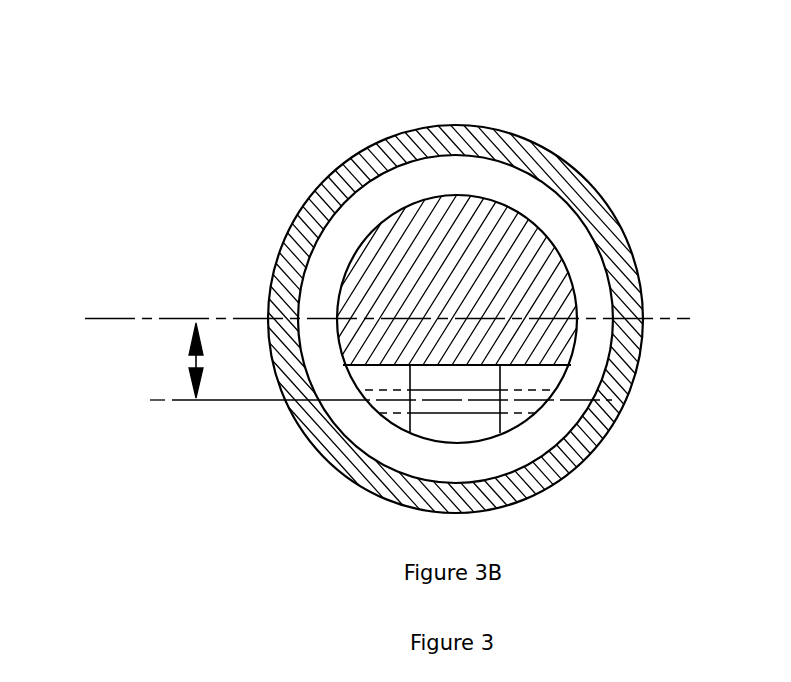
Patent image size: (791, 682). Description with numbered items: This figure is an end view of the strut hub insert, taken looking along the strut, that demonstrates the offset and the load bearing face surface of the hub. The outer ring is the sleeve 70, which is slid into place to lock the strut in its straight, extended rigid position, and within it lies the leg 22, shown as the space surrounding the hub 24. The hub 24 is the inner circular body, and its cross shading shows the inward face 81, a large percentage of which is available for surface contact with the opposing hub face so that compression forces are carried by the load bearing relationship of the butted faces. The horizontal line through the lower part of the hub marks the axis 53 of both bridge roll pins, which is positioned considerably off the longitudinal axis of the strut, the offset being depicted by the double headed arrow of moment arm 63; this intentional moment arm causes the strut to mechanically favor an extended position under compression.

The sleeve 70 is at (338, 168).
The leg 22 is at (432, 170).
The hub 24 is at (533, 220).
The inward face 81 is at (372, 283).
The axis 53 is at (250, 402).
The moment arm 63 is at (188, 362).